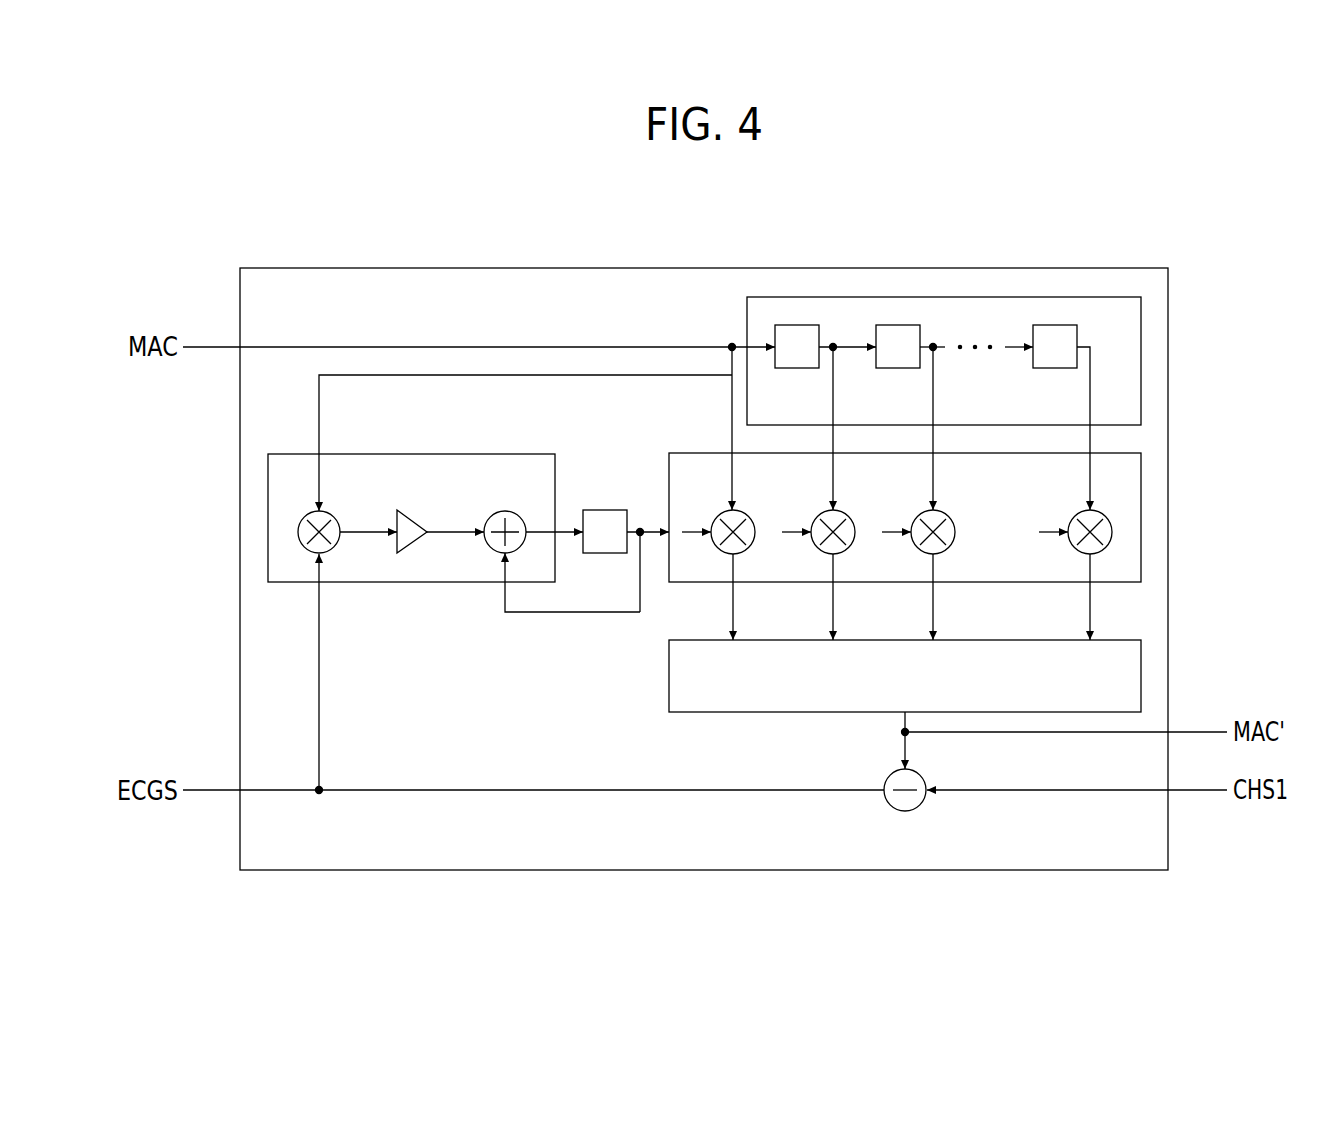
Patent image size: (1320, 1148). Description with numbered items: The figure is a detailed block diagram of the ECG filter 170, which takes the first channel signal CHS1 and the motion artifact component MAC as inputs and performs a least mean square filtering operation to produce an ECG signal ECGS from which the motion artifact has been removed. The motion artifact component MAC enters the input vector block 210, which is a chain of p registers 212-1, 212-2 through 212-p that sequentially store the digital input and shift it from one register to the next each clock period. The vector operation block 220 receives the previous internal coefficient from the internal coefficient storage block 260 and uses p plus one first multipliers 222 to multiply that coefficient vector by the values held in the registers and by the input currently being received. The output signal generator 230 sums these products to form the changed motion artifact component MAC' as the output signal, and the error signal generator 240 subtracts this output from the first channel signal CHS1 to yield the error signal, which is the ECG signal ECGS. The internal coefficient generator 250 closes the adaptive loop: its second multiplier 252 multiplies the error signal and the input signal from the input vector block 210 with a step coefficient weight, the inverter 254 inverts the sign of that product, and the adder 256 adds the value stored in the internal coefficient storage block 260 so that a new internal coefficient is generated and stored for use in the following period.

The ECG filter 170 is at (945, 266).
The input vector block 210 is at (906, 403).
The register 212-1 is at (797, 370).
The register 212-2 is at (898, 370).
The register 212-p is at (1055, 370).
The vector operation block 220 is at (905, 546).
The first multiplier 222 is at (1072, 515).
The output signal generator 230 is at (668, 673).
The error signal generator 240 is at (893, 810).
The internal coefficient generator 250 is at (454, 600).
The second multiplier 252 is at (337, 517).
The inverter 254 is at (440, 503).
The adder 256 is at (503, 510).
The internal coefficient storage block 260 is at (603, 508).